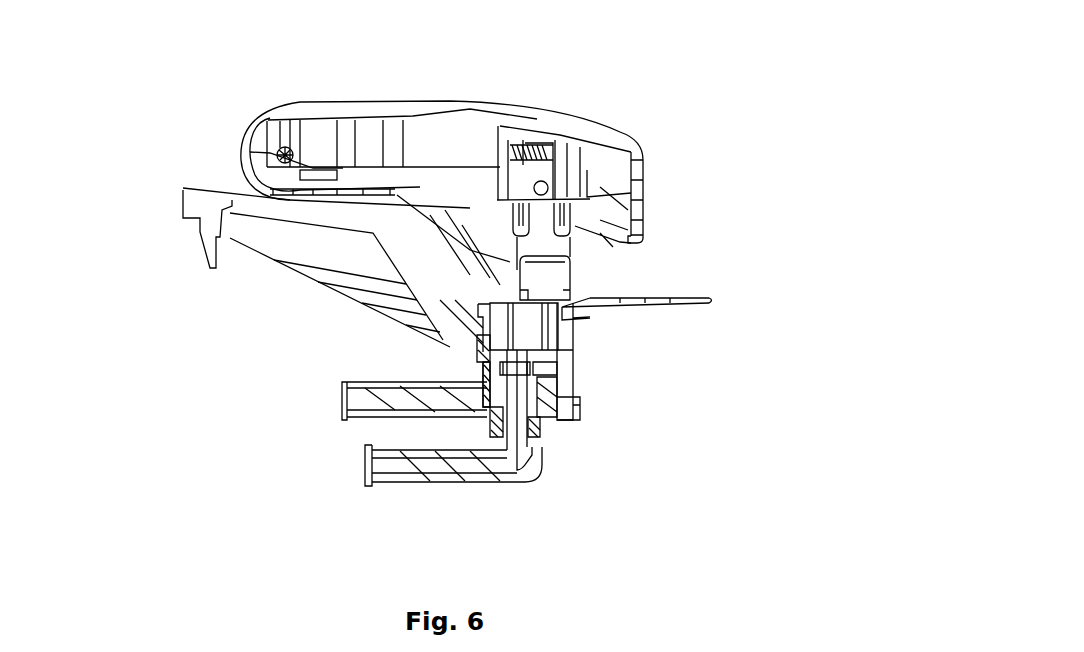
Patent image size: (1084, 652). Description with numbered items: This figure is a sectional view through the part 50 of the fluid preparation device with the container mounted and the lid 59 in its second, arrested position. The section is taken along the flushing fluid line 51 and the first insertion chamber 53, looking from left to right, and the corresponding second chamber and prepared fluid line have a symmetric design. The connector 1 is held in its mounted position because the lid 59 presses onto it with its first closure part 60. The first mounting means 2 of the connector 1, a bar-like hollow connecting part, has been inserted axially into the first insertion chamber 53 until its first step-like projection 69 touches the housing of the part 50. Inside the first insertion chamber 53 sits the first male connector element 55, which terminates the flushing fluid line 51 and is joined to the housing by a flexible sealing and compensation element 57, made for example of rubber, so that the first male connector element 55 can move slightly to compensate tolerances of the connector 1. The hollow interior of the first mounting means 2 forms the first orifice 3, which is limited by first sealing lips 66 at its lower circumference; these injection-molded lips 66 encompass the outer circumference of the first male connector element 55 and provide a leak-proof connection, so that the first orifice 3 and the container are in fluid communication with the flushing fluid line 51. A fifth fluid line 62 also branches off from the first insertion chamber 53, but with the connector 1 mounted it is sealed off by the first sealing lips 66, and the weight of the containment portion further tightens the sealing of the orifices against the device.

The lid 59 is at (453, 105).
The part of the fluid preparation device 50 is at (240, 326).
The fifth fluid line 62 is at (373, 397).
The first sealing lips 66 is at (485, 395).
The flushing fluid line 51 is at (427, 470).
The first mounting means 2 is at (480, 342).
The first orifice 3 is at (523, 355).
The first step-like projection 69 is at (562, 344).
The first male connector element 55 is at (545, 372).
The first insertion chamber 53 is at (547, 405).
The flexible sealing and compensation element 57 is at (540, 435).
The first closure part 60 is at (573, 273).
The connector 1 is at (560, 330).